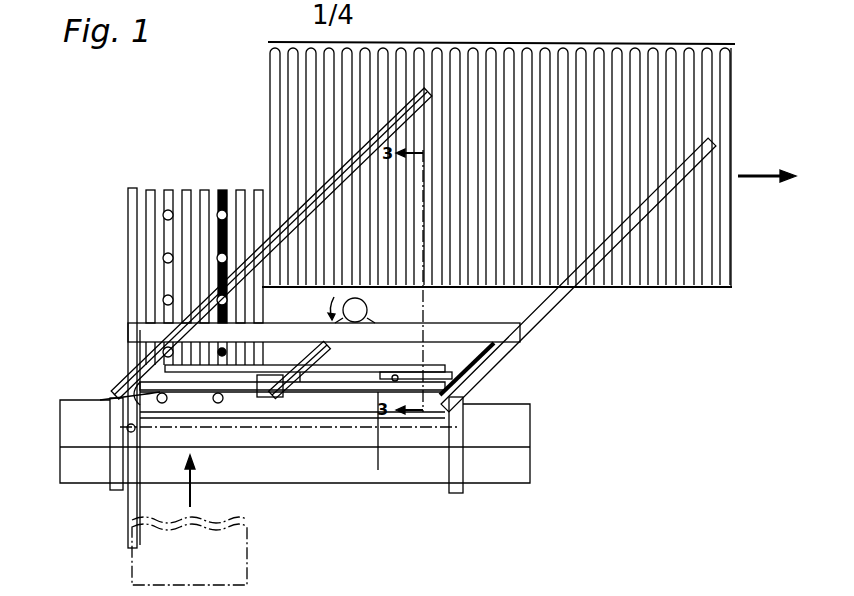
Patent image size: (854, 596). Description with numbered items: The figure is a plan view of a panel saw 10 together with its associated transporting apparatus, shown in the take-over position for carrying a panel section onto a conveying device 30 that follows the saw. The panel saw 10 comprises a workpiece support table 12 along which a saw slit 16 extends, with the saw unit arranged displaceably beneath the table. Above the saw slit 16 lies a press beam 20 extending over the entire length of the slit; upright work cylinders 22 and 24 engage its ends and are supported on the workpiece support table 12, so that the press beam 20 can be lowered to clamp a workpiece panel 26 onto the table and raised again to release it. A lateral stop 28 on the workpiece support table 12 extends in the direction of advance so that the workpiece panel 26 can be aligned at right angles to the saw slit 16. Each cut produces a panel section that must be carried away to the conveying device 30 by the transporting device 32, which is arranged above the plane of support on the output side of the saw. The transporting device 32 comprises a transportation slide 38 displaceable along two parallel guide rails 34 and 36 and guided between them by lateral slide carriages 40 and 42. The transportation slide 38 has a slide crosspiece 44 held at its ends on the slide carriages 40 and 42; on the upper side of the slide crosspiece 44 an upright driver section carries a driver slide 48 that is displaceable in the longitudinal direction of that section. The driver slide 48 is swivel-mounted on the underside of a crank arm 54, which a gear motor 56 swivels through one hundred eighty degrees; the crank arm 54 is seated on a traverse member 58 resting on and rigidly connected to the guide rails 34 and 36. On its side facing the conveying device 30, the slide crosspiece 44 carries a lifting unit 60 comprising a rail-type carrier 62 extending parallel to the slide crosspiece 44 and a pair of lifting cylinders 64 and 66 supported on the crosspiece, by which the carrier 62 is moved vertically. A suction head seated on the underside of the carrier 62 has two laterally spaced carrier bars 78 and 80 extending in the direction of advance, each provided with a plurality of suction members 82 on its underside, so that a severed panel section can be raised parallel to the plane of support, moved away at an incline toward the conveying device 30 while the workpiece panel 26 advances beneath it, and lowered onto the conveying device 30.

The panel saw 10 is at (544, 425).
The workpiece support table 12 is at (202, 190).
The saw slit 16 is at (276, 450).
The press beam 20 is at (378, 483).
The work cylinder 22 is at (463, 402).
The work cylinder 24 is at (127, 426).
The workpiece panel 26 is at (248, 575).
The lateral stop 28 is at (128, 256).
The conveying device 30 is at (586, 41).
The transporting device 32 is at (532, 339).
The guide rail 34 is at (350, 160).
The guide rail 36 is at (716, 151).
The transportation slide 38 is at (150, 394).
The slide carriage 40 is at (118, 396).
The slide carriage 42 is at (472, 350).
The slide crosspiece 44 is at (200, 388).
The driver slide 48 is at (292, 380).
The crank arm 54 is at (332, 440).
The gear motor 56 is at (368, 304).
The traverse member 58 is at (455, 336).
The lifting unit 60 is at (266, 375).
The rail-type carrier 62 is at (345, 372).
The lifting cylinder 64 is at (400, 372).
The lifting cylinder 66 is at (262, 397).
The carrier bar 78 is at (160, 232).
The carrier bar 80 is at (238, 190).
The suction member 82 is at (164, 211).